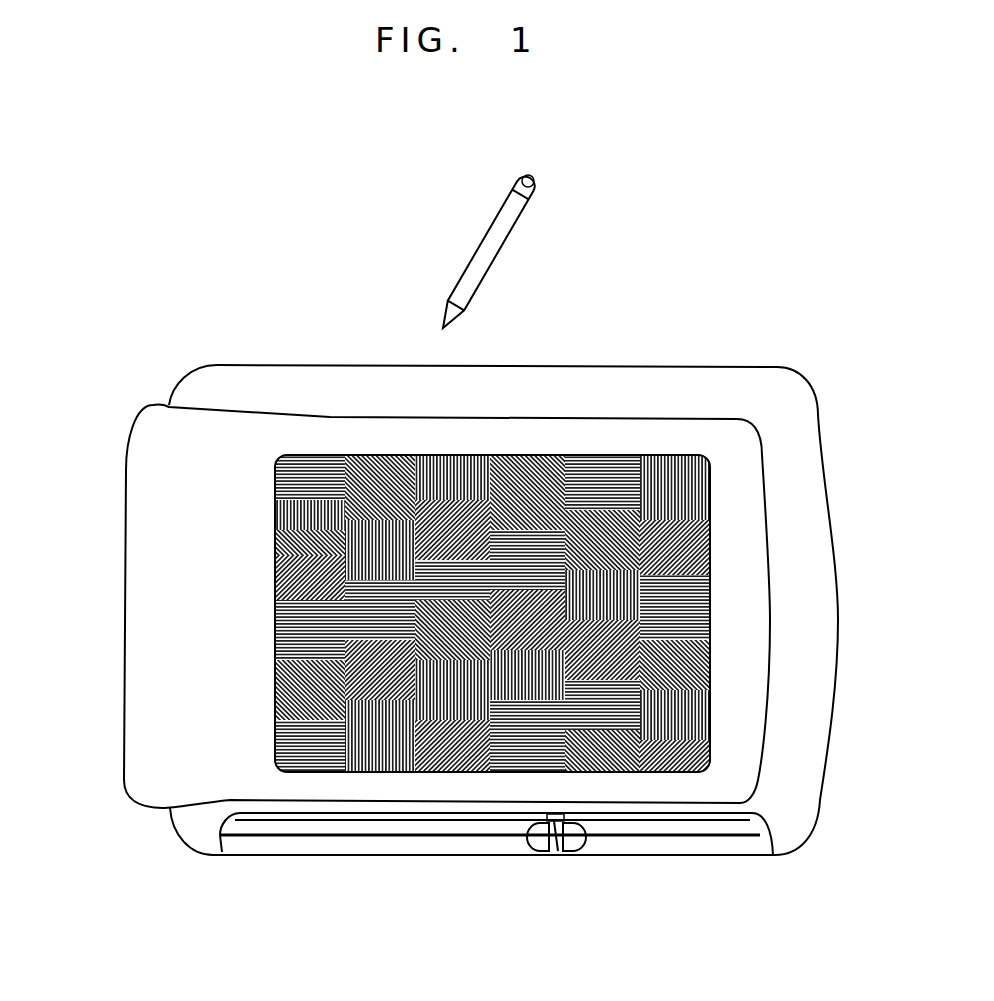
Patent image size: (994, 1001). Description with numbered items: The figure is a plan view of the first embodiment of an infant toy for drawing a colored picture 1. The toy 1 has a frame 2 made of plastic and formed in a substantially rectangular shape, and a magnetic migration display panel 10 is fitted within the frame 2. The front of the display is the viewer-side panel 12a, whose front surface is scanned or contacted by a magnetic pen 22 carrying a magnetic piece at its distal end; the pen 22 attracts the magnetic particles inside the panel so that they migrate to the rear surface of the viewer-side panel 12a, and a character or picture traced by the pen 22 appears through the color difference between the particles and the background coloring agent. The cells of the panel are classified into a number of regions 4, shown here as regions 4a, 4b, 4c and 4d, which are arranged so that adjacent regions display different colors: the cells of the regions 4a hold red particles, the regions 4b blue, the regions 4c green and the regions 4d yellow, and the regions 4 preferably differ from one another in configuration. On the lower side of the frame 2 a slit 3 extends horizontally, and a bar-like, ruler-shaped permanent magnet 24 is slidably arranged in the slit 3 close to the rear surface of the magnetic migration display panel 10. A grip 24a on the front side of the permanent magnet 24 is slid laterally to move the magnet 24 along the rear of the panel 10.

The infant toy for drawing a colored picture 1 is at (349, 330).
The frame 2 is at (258, 368).
The slit 3 is at (327, 820).
The regions 4 is at (52, 672).
The regions 4a is at (275, 480).
The regions 4b is at (275, 520).
The regions 4c is at (275, 541).
The regions 4d is at (275, 573).
The magnetic migration display panel 10 is at (640, 437).
The viewer-side panel 12a is at (457, 613).
The magnetic pen 22 is at (488, 258).
The permanent magnet 24 is at (591, 870).
The grip 24a is at (552, 852).